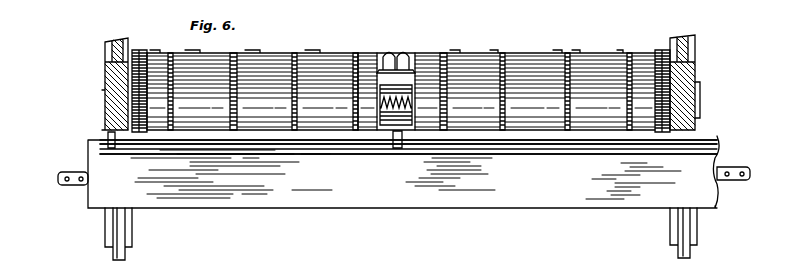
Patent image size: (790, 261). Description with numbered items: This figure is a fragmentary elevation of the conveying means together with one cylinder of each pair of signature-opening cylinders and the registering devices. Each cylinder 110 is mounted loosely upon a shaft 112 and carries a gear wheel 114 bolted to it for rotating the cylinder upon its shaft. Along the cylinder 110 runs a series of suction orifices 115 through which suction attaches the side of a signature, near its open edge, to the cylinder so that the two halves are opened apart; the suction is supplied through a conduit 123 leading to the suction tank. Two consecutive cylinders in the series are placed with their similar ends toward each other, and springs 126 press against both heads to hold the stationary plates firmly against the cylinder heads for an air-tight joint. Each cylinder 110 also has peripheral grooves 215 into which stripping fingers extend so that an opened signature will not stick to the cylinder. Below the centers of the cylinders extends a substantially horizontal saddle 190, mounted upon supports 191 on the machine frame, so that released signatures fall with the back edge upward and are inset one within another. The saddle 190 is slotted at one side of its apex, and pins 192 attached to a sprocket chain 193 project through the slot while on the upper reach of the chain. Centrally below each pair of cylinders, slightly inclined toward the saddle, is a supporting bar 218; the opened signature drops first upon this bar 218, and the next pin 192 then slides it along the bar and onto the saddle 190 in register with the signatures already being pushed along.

The cylinder 110 is at (401, 107).
The shaft 112 is at (700, 100).
The gear wheel 114 is at (105, 87).
The suction orifices 115 is at (187, 53).
The conduit 123 is at (401, 51).
The springs 126 is at (385, 82).
The saddle 190 is at (460, 197).
The supports 191 is at (112, 240).
The pins 192 is at (108, 138).
The sprocket chain 193 is at (82, 185).
The peripheral grooves 215 is at (291, 53).
The supporting bar 218 is at (160, 140).